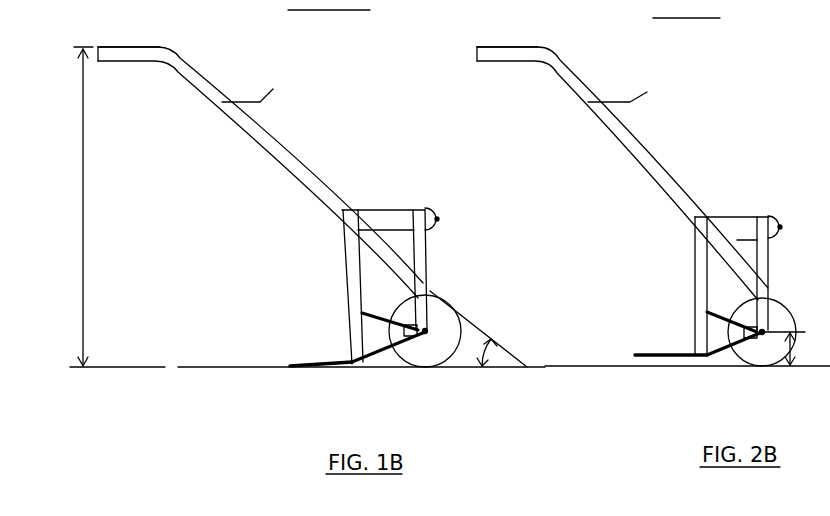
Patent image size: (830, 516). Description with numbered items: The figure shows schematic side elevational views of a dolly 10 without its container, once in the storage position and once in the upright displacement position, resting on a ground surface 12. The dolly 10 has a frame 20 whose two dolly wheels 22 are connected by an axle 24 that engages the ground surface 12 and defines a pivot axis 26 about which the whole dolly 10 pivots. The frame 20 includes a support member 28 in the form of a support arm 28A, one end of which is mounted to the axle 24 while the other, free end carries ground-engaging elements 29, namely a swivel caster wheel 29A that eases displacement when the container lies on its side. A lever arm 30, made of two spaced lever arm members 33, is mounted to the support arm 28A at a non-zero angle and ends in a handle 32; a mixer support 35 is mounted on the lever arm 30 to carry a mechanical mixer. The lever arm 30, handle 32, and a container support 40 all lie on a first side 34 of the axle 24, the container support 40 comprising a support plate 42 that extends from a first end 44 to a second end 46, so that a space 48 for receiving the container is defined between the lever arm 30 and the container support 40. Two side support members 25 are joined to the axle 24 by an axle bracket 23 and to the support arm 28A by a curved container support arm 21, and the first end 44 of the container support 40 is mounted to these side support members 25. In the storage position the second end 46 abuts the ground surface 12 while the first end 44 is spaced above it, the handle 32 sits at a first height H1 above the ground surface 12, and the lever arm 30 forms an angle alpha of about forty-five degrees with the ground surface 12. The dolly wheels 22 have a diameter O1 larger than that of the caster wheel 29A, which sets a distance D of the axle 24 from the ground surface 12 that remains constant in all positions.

In FIG. 1B, the dolly 10 is at (202, 40).
In FIG. 2B, the dolly 10 is at (734, 72).
In FIG. 2B, the ground surface 12 is at (577, 363).
In FIG. 1B, the frame 20 is at (384, 186).
In FIG. 2B, the container support arm 21 is at (738, 224).
In FIG. 1B, the dolly wheels 22 is at (434, 353).
In FIG. 2B, the dolly wheels 22 is at (762, 332).
In FIG. 2B, the axle bracket 23 is at (722, 310).
In FIG. 1B, the axle 24 is at (478, 317).
In FIG. 2B, the side support members 25 is at (695, 256).
In FIG. 1B, the pivot axis 26 is at (424, 336).
In FIG. 2B, the pivot axis 26 is at (766, 336).
In FIG. 2B, the support member 28 is at (716, 197).
In FIG. 1B, the support arm 28A is at (420, 248).
In FIG. 1B, the ground-engaging elements 29 is at (441, 205).
In FIG. 1B, the caster wheel 29A is at (449, 215).
In FIG. 1B, the lever arm 30 is at (292, 142).
In FIG. 2B, the lever arm 30 is at (661, 152).
In FIG. 1B, the handle 32 is at (128, 44).
In FIG. 2B, the handle 32 is at (508, 50).
In FIG. 2B, the lever arm members 33 is at (569, 88).
In FIG. 1B, the first side 34 is at (190, 288).
In FIG. 2B, the mixer support 35 is at (618, 100).
In FIG. 1B, the container support 40 is at (321, 355).
In FIG. 2B, the container support 40 is at (632, 346).
In FIG. 1B, the support plate 42 is at (309, 360).
In FIG. 1B, the first end 44 is at (354, 368).
In FIG. 2B, the first end 44 is at (707, 360).
In FIG. 1B, the second end 46 is at (291, 369).
In FIG. 1B, the space 48 is at (334, 291).
In FIG. 2B, the space 48 is at (684, 305).
In FIG. 1B, the first height H1 is at (69, 206).
In FIG. 1B, the angle alpha is at (480, 352).
In FIG. 2B, the distance D is at (791, 348).
In FIG. 2B, the diameter O1 is at (812, 398).